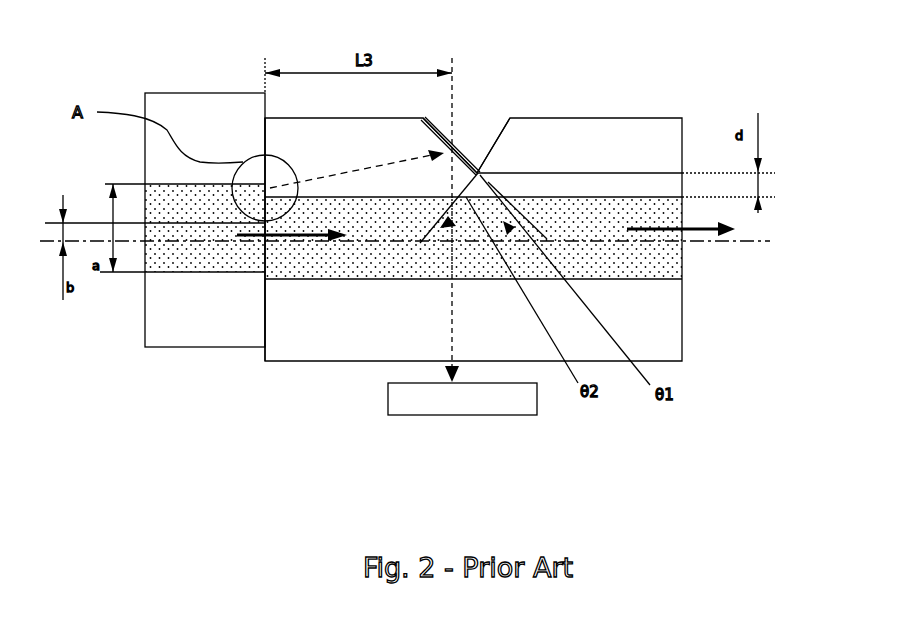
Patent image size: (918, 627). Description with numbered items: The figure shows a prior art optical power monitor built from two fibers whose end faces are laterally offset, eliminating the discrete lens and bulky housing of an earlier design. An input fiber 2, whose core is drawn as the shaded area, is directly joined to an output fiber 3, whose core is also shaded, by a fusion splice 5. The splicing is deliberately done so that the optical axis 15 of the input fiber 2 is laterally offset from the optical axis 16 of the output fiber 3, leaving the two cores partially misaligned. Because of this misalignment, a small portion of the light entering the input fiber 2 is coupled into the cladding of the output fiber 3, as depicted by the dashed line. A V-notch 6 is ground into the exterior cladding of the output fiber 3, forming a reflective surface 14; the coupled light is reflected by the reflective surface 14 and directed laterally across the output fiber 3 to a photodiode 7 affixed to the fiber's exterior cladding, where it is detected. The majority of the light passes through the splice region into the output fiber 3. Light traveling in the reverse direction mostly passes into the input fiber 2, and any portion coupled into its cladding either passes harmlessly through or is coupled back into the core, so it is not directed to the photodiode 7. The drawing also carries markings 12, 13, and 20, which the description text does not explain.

The input fiber 2 is at (198, 335).
The output fiber 3 is at (665, 297).
The fusion splice 5 is at (265, 280).
The V-notch 6 is at (455, 160).
The photodiode 7 is at (520, 407).
The groove bottom surface 12 is at (480, 170).
The core of optical block 13 is at (625, 283).
The reflective surface 14 is at (460, 153).
The optical axis of the input fiber 15 is at (97, 227).
The optical axis of the output fiber 16 is at (752, 243).
The filter surface 20 is at (430, 137).